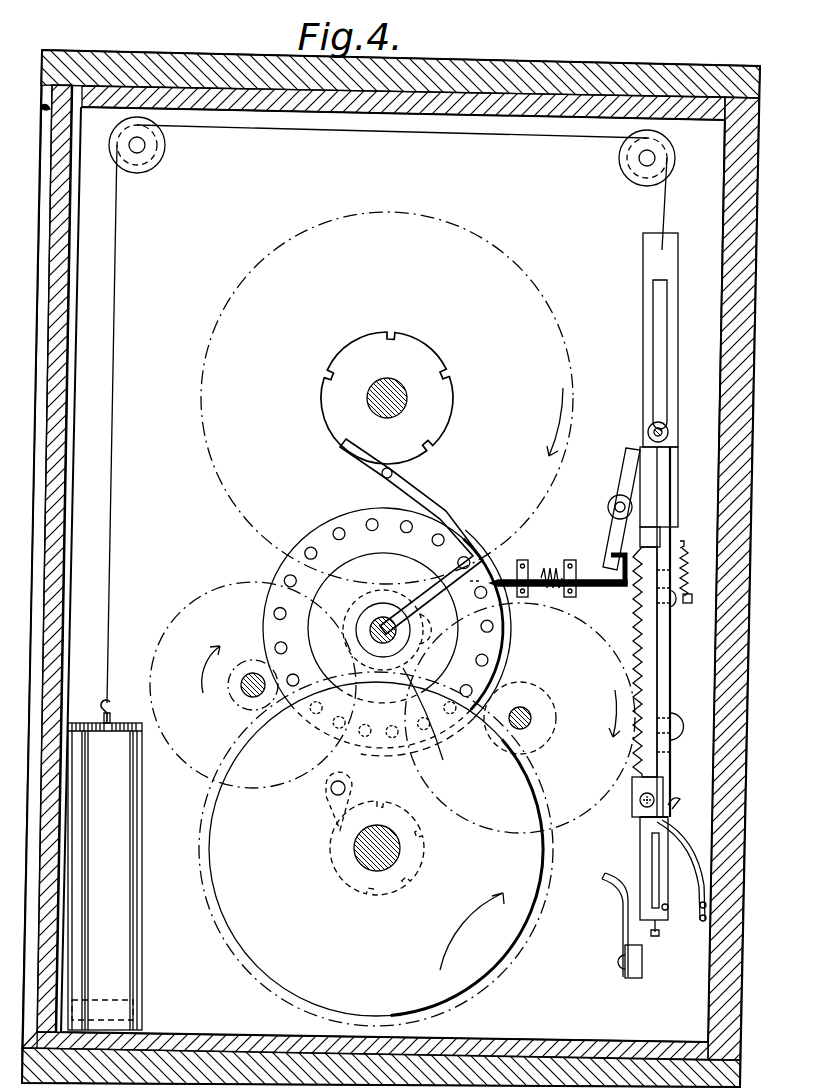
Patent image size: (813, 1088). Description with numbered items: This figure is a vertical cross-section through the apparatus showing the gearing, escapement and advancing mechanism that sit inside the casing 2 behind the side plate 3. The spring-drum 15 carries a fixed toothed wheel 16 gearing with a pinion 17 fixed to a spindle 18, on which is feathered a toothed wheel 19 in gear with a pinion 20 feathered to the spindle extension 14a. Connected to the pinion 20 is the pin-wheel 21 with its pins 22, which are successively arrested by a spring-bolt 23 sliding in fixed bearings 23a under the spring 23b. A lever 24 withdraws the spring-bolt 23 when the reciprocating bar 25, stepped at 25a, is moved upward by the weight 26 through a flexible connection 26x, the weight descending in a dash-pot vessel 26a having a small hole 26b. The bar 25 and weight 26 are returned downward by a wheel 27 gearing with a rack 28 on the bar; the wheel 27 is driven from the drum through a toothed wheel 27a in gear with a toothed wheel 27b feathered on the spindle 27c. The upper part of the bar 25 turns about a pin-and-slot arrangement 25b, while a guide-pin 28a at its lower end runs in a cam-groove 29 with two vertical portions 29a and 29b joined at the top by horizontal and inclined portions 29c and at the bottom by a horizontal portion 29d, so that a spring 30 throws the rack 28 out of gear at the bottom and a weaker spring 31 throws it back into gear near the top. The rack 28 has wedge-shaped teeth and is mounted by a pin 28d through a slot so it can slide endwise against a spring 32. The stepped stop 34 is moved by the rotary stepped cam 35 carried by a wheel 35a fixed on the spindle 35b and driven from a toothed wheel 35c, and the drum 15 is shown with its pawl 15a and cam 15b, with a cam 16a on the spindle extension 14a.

The casing frame 2 is at (643, 73).
The door plate 3 is at (38, 144).
The spindle extension 14a is at (379, 616).
The spring-drum 15 is at (376, 849).
The pawl on wheel 15a is at (319, 819).
The cam on wheel 15b is at (333, 863).
The toothed wheel 16 is at (207, 818).
The cam on shaft 16a is at (396, 633).
The pinion 17 is at (240, 660).
The spindle 18 is at (250, 688).
The toothed wheel 19 is at (170, 629).
The pinion 20 is at (350, 609).
The pin-wheel 21 is at (315, 527).
The pins 22 is at (336, 541).
The spring-bolt 23 is at (508, 614).
The fixed bearings 23a is at (588, 537).
The spring 23b is at (560, 590).
The lever 24 is at (627, 485).
The reciprocating bar 25 is at (655, 489).
The step 25a is at (667, 445).
The pin-and-slot arrangement 25b is at (662, 393).
The weight 26 is at (109, 703).
The vessel 26a is at (140, 895).
The small hole 26b is at (145, 1013).
The flexible connection 26x is at (262, 128).
The wheel 27 is at (606, 804).
The toothed wheel 27a is at (510, 668).
The toothed wheel 27b is at (543, 754).
The spindle 27c is at (531, 708).
The rack 28 is at (645, 666).
The guide-pin 28a is at (655, 800).
The pin 28d is at (673, 607).
The slide 29 is at (654, 868).
The vertical portion of cam-groove 29a is at (650, 873).
The vertical portion of cam-groove 29b is at (668, 909).
The horizontal and inclined portions 29c is at (642, 819).
The horizontal portion 29d is at (657, 913).
The spring 30 is at (623, 909).
The spring 31 is at (684, 859).
The spring 32 is at (682, 559).
The stepped stop 34 is at (421, 583).
The rotary stepped cam 35 is at (387, 398).
The wheel 35a is at (558, 330).
The spindle 35b is at (392, 400).
The toothed wheel 35c is at (439, 722).